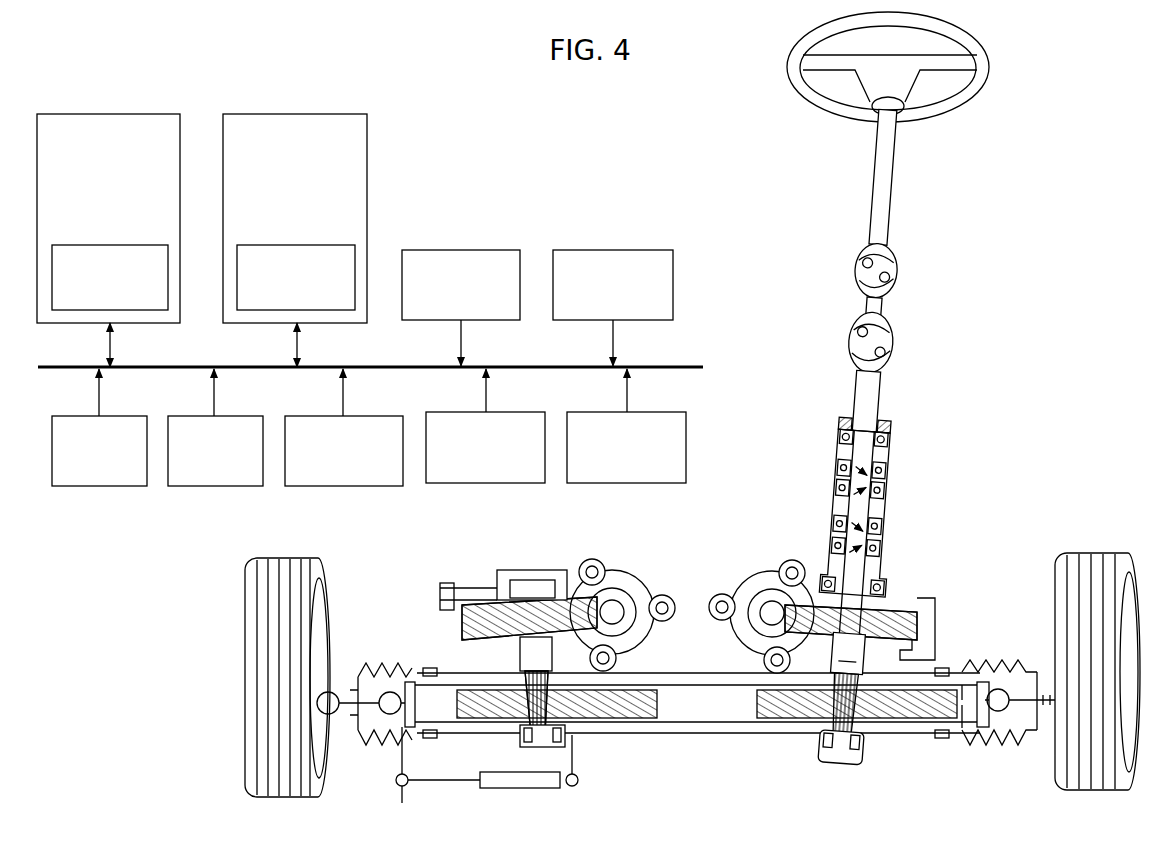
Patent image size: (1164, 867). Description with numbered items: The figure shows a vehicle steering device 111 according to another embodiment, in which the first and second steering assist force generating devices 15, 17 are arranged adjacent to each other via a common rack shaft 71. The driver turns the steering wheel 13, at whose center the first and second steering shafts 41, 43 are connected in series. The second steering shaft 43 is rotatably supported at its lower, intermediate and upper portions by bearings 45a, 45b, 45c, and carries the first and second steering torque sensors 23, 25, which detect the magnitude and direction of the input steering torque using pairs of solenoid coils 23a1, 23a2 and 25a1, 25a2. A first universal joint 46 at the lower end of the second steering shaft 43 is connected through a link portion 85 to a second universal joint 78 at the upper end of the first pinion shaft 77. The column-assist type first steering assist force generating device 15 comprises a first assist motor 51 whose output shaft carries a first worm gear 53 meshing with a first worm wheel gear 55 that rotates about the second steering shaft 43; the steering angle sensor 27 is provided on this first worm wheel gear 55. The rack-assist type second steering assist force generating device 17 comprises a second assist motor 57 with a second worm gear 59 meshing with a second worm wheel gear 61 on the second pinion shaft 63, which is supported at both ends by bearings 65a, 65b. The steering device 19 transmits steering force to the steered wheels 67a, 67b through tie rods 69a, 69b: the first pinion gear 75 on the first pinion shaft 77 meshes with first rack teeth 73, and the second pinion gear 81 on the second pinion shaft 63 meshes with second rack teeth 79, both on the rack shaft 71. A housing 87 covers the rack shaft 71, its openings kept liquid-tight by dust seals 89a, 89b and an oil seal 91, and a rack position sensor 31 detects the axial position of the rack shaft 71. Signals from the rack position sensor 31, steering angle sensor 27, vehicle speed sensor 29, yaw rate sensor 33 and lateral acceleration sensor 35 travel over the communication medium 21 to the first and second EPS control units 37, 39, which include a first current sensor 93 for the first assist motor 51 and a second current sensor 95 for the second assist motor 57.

The vehicle steering device 111 is at (1095, 68).
The steering wheel 13 is at (985, 62).
The first steering shaft 41 is at (895, 178).
The first universal joint 46 is at (902, 258).
The link portion 85 is at (885, 308).
The second universal joint 78 is at (900, 352).
The oil seal 91 is at (895, 425).
The bearing 45c is at (910, 438).
The solenoid coil 23a1 is at (840, 470).
The solenoid coil 23a2 is at (838, 494).
The solenoid coil 25a1 is at (835, 524).
The solenoid coil 25a2 is at (832, 548).
The first steering torque sensor 23 is at (658, 412).
The second steering torque sensor 25 is at (517, 412).
The second steering shaft 43 is at (870, 505).
The bearing 45b is at (895, 590).
The first worm wheel gear 55 is at (920, 626).
The first steering assist force generating device 15 is at (745, 596).
The first worm gear 53 is at (730, 595).
The first assist motor 51 is at (740, 635).
The first pinion shaft 77 is at (848, 653).
The first pinion gear 75 is at (828, 718).
The bearing 45a is at (858, 748).
The second steering assist force generating device 17 is at (534, 648).
The second worm gear 59 is at (607, 600).
The second assist motor 57 is at (648, 630).
The second worm wheel gear 61 is at (470, 622).
The second pinion shaft 63 is at (530, 652).
The bearing 65a is at (520, 742).
The bearing 65b is at (510, 590).
The second rack teeth 79 is at (630, 705).
The second pinion gear 81 is at (560, 720).
The rack shaft 71 is at (692, 712).
The first rack teeth 73 is at (908, 708).
The housing 87 is at (757, 738).
The steering device 19 is at (735, 755).
The rack position sensor 31 is at (490, 250).
The steered wheel 67a is at (1090, 565).
The steered wheel 67b is at (284, 570).
The tie rod 69a is at (1015, 735).
The tie rod 69b is at (362, 735).
The dust seal 89a is at (985, 750).
The dust seal 89b is at (375, 748).
The communication medium 21 is at (662, 365).
The second EPS control unit 39 is at (141, 114).
The first EPS control unit 37 is at (328, 114).
The second current sensor 95 is at (138, 245).
The first current sensor 93 is at (328, 245).
The vehicle speed sensor 29 is at (643, 250).
The lateral acceleration sensor 35 is at (128, 416).
The yaw rate sensor 33 is at (243, 416).
The steering angle sensor 27 is at (358, 416).